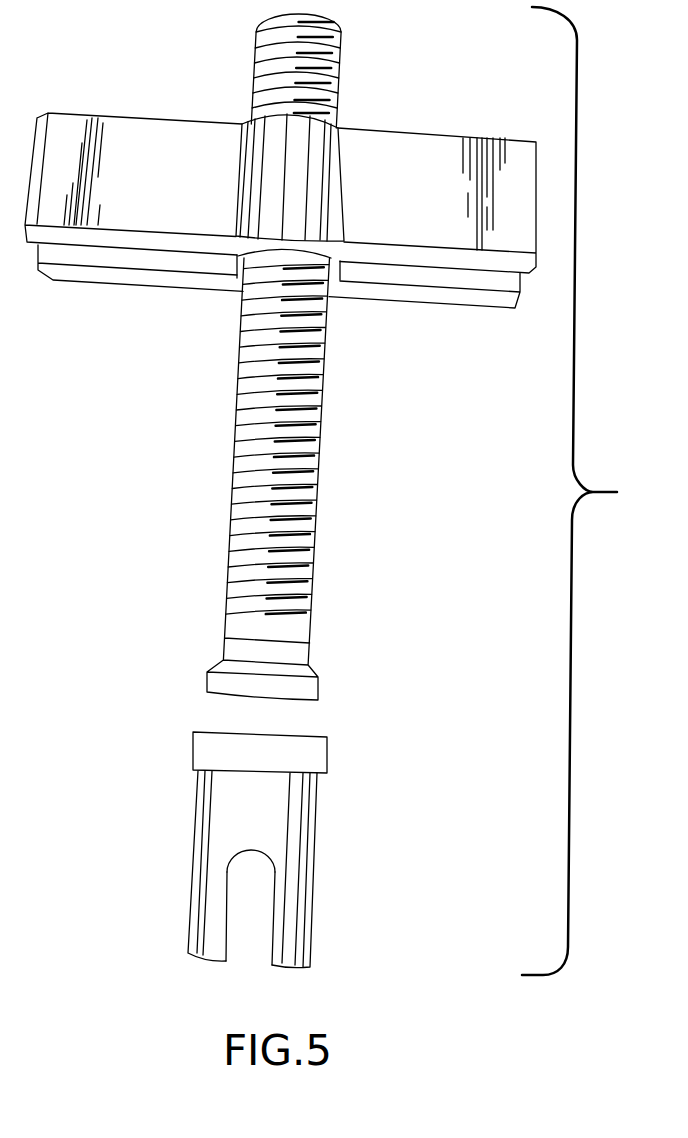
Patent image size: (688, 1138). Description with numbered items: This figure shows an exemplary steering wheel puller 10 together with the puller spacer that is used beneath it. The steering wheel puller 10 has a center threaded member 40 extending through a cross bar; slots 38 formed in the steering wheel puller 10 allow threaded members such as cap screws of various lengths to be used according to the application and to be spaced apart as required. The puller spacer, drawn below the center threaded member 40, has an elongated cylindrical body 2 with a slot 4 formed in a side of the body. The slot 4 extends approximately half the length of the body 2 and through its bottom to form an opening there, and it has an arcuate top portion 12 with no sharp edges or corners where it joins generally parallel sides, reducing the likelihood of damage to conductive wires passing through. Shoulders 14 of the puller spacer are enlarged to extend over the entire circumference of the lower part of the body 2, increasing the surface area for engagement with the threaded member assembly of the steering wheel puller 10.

The steering wheel puller 10 is at (404, 147).
The slots 38 is at (113, 255).
The center threaded member 40 is at (305, 355).
The shoulders 14 is at (312, 759).
The cylindrical body 2 is at (308, 903).
The slot 4 is at (252, 898).
The arcuate top portion 12 is at (251, 850).